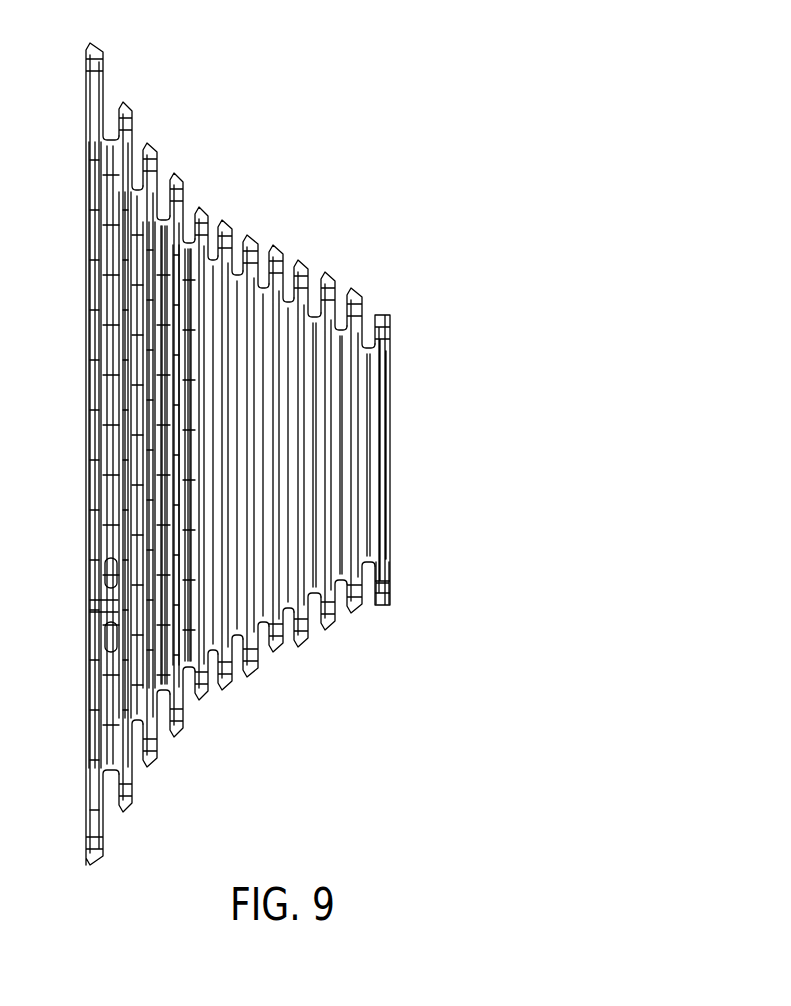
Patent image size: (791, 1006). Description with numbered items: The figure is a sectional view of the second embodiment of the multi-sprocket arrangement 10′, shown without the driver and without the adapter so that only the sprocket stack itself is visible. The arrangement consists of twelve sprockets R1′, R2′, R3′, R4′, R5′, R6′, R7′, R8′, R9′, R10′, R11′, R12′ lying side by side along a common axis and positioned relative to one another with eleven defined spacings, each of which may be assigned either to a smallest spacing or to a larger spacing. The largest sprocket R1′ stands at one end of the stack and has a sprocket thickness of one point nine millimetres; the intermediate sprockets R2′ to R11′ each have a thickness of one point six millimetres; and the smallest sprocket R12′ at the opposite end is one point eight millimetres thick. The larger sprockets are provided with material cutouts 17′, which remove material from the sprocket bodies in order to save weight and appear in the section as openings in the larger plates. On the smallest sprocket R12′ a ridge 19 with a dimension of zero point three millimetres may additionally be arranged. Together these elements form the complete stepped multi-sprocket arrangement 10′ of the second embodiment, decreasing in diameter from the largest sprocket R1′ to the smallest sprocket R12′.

The multi-sprocket arrangement 10′ is at (296, 94).
The largest sprocket R1′ is at (87, 48).
The sprocket R2′ is at (122, 808).
The sprocket R3′ is at (151, 141).
The sprocket R4′ is at (178, 737).
The sprocket R5′ is at (205, 207).
The sprocket R6′ is at (228, 690).
The sprocket R7′ is at (252, 235).
The sprocket R8′ is at (280, 652).
The sprocket R9′ is at (304, 260).
The sprocket R10′ is at (334, 630).
The sprocket R11′ is at (357, 288).
The smallest sprocket R12′ is at (380, 313).
The material cutouts 17′ is at (110, 637).
The ridge 19 is at (383, 581).